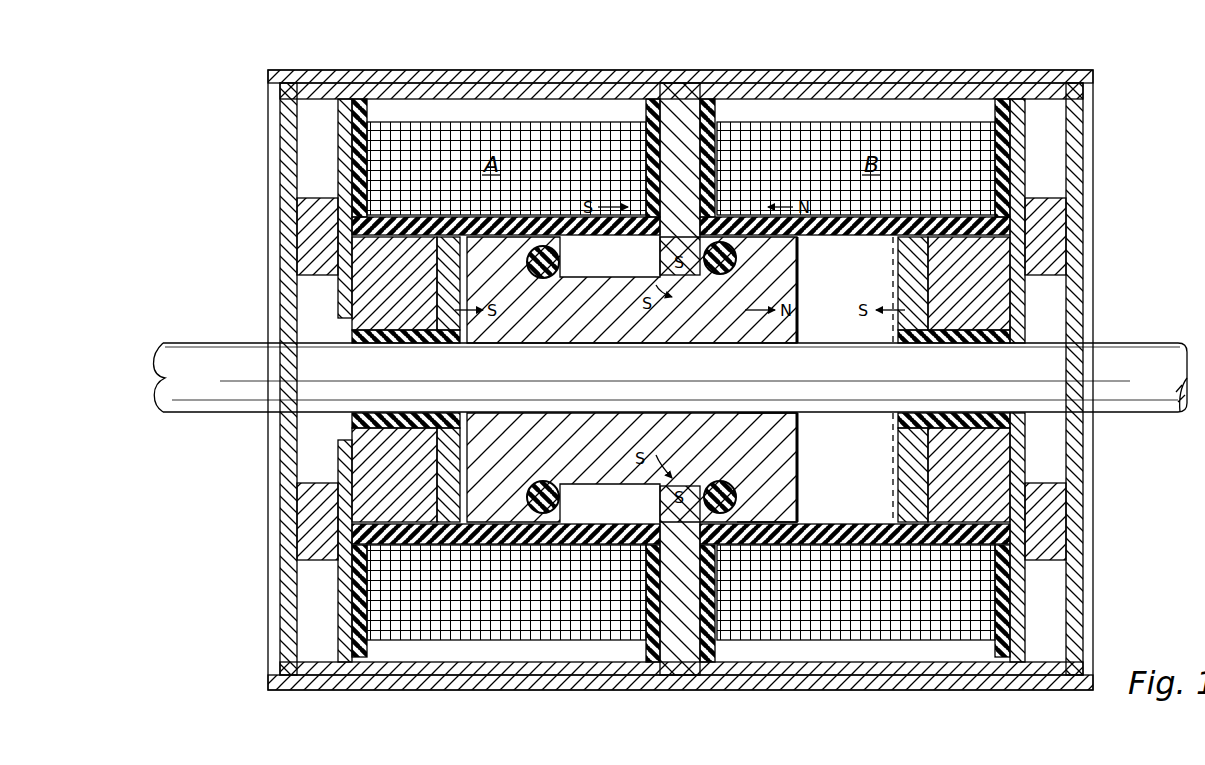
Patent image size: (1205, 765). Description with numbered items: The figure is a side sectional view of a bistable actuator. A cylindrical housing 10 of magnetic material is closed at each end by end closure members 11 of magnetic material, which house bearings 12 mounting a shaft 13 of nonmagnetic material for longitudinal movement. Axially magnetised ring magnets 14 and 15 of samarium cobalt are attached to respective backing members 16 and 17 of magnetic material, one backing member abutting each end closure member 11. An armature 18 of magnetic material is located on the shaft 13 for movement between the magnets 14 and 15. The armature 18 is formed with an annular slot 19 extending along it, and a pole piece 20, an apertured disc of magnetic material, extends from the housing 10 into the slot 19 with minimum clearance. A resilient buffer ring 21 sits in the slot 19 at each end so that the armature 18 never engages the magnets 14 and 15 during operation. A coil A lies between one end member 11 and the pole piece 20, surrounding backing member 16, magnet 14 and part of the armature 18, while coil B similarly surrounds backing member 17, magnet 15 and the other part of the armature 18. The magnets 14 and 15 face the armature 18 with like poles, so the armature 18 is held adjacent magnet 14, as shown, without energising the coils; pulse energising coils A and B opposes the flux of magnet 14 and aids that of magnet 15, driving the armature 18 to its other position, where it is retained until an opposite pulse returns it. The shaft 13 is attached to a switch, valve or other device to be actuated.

The cylindrical housing 10 is at (727, 80).
The end closure member 11 is at (292, 240).
The bearing 12 is at (1000, 325).
The shaft 13 is at (1135, 358).
The ring magnet 14 is at (445, 462).
The ring magnet 15 is at (912, 497).
The backing member 16 is at (370, 453).
The backing member 17 is at (898, 450).
The armature 18 is at (790, 490).
The annular slot 19 is at (600, 482).
The pole piece 20 is at (670, 515).
The resilient buffer ring 21 is at (545, 480).